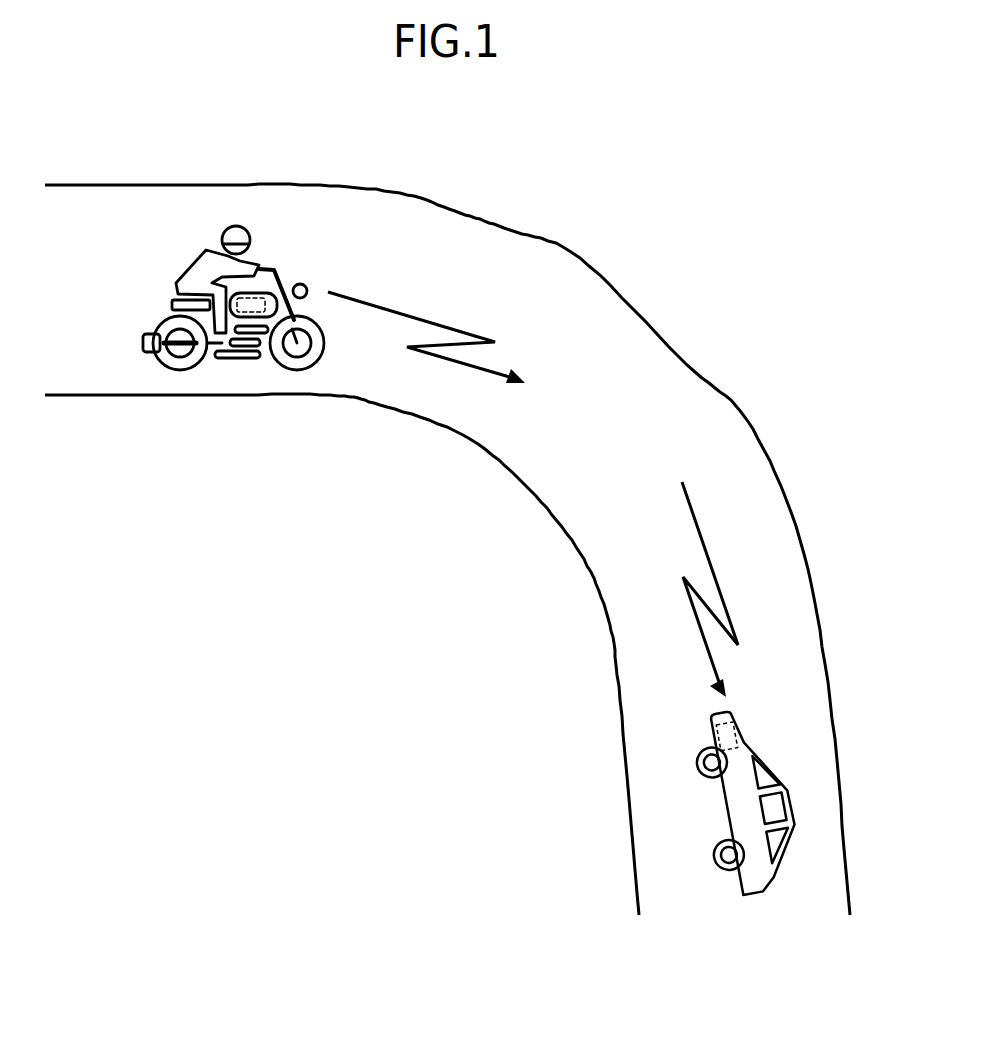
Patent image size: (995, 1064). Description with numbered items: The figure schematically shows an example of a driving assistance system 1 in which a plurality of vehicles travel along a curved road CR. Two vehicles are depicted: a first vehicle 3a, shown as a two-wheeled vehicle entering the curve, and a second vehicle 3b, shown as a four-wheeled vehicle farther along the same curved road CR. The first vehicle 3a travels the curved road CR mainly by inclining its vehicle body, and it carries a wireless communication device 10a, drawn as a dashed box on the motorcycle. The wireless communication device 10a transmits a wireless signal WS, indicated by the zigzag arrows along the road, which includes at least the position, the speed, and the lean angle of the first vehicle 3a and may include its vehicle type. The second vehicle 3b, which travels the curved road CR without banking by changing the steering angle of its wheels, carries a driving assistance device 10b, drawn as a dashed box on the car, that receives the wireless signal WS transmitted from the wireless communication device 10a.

The driving assistance system 1 is at (238, 650).
The first vehicle 3a is at (233, 292).
The second vehicle 3b is at (676, 801).
The wireless communication device 10a is at (262, 296).
The driving assistance device 10b is at (726, 736).
The wireless signal WS is at (406, 312).
The curved road CR is at (677, 296).